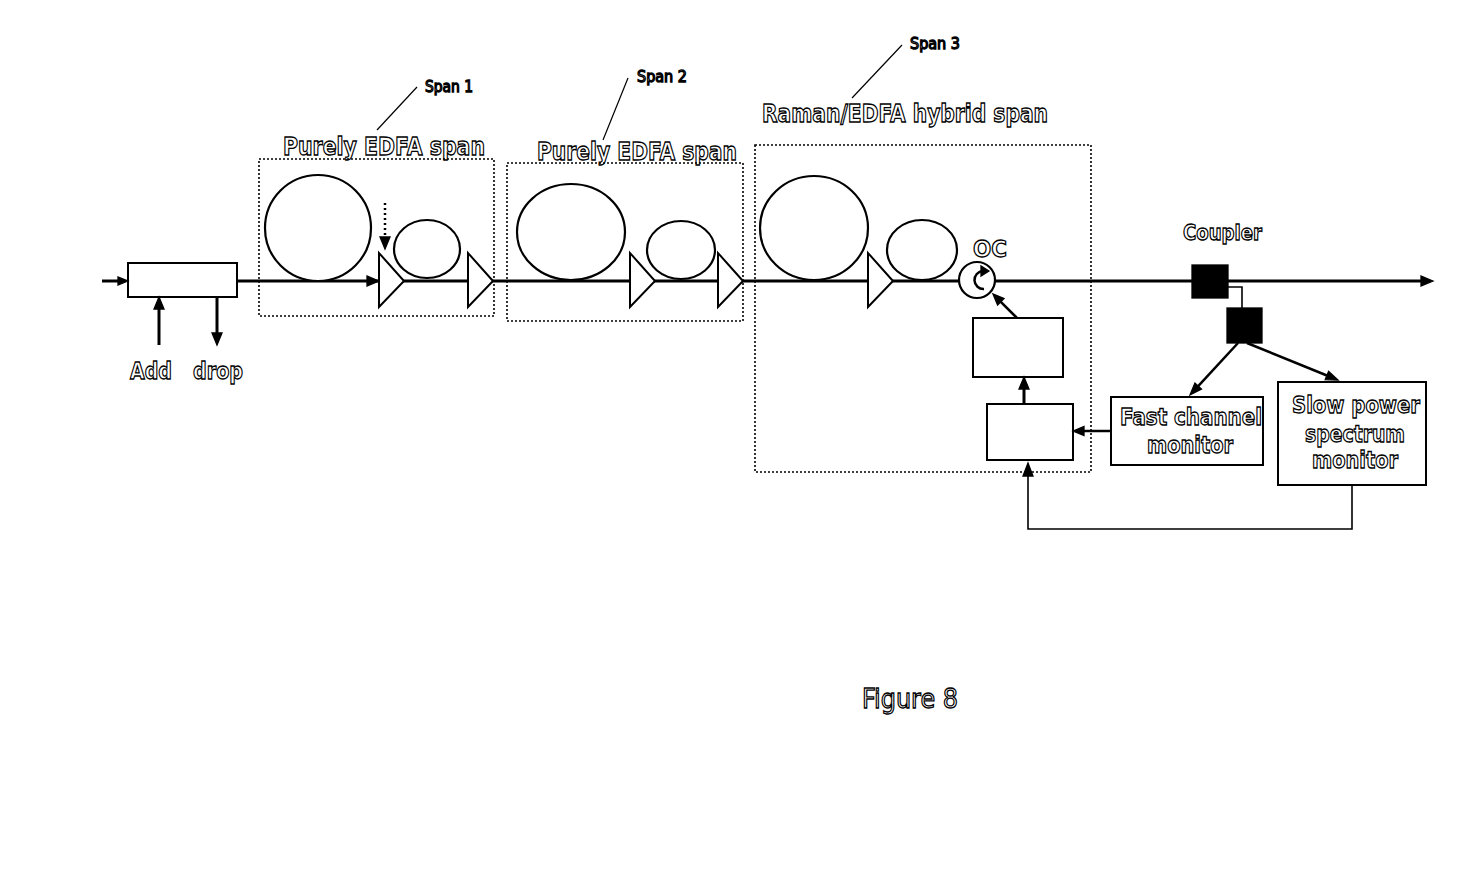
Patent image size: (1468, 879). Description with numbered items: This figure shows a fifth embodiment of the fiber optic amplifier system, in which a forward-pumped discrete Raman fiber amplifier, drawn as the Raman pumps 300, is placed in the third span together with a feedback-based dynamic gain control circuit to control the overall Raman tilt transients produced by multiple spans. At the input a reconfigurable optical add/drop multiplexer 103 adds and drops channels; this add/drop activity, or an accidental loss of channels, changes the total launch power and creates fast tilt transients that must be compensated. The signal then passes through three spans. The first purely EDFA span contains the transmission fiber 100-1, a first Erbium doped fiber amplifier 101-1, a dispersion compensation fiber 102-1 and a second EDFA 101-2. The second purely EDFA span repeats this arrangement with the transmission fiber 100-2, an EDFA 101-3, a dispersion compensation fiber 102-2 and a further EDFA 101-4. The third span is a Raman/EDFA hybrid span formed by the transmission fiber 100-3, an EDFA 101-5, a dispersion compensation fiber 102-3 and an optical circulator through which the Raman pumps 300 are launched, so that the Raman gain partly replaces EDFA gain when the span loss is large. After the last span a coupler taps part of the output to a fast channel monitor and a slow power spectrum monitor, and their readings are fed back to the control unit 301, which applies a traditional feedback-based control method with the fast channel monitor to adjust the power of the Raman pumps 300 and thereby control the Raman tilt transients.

The reconfigurable optical add/drop multiplexer 103 is at (171, 253).
The transmission fiber 100-1 is at (280, 192).
The transmission fiber 100-2 is at (597, 190).
The transmission fiber 100-3 is at (817, 178).
The first Erbium doped fiber amplifier 101-1 is at (377, 304).
The second Erbium doped fiber optic amplifier 101-2 is at (465, 304).
The Erbium doped fiber amplifier 101-3 is at (627, 304).
The Erbium doped fiber amplifier 101-4 is at (715, 304).
The Erbium doped fiber amplifier 101-5 is at (866, 304).
The dispersion compensation fiber 102-1 is at (448, 220).
The dispersion compensation fiber 102-2 is at (683, 217).
The dispersion compensation fiber 102-3 is at (928, 217).
The Raman pumps 300 is at (1065, 340).
The control unit 301 is at (986, 457).